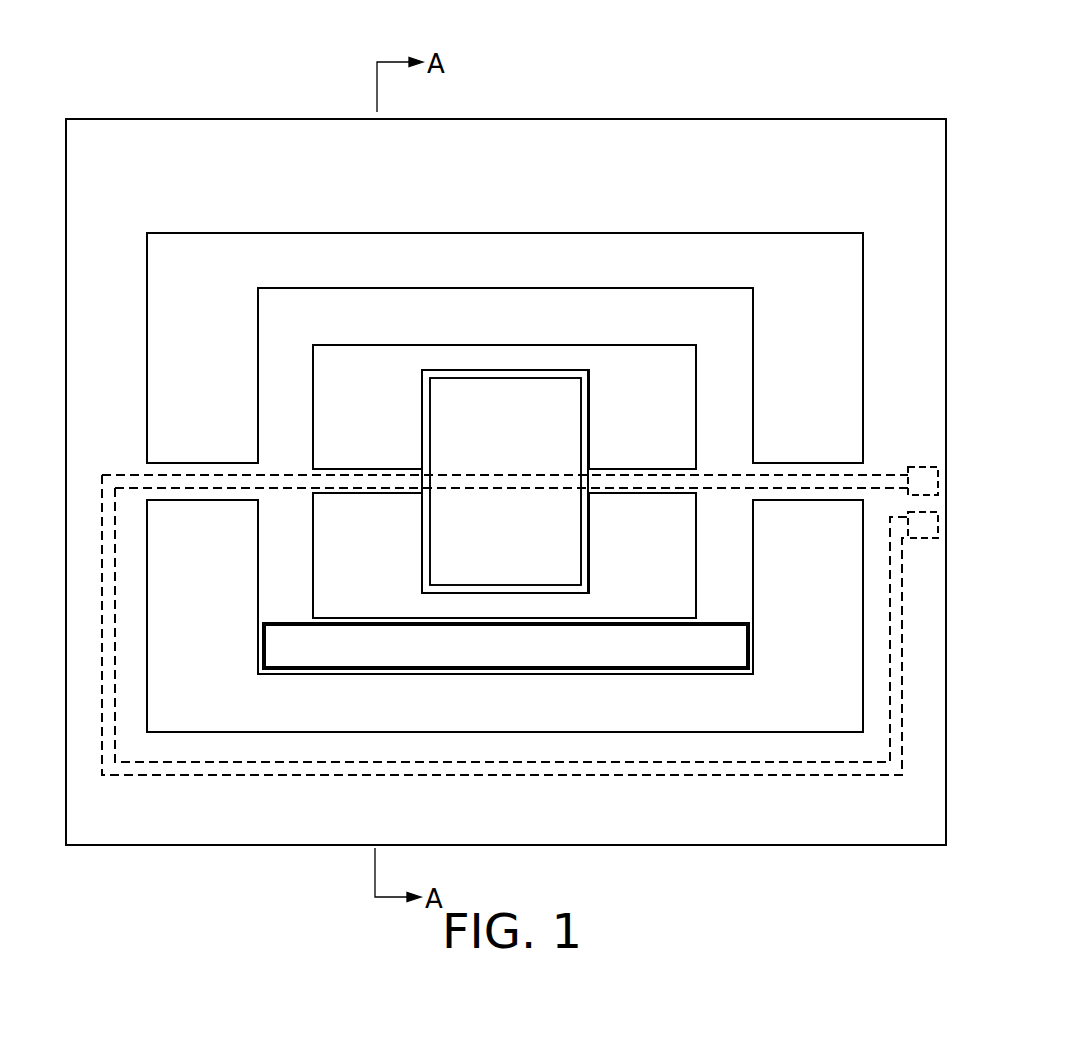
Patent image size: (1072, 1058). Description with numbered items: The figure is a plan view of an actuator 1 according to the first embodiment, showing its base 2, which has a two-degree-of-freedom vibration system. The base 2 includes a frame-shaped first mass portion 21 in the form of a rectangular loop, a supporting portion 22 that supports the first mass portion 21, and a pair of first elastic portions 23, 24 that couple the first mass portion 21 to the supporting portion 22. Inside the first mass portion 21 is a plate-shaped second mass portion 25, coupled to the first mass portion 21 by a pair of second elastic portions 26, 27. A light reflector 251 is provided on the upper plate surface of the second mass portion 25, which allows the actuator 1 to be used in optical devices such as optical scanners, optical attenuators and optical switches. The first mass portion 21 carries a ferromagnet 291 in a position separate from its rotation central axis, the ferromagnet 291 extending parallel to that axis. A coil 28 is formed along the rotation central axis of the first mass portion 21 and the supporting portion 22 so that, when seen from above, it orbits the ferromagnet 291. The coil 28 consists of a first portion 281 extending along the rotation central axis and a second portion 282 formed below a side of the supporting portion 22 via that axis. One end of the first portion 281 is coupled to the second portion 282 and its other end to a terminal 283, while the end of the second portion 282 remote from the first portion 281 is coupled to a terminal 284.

The actuator 1 is at (879, 102).
The base 2 is at (917, 296).
The first mass portion 21 is at (612, 313).
The supporting portion 22 is at (918, 394).
The first elastic portion 23 is at (198, 473).
The first elastic portion 24 is at (807, 472).
The second mass portion 25 is at (419, 590).
The light reflector 251 is at (513, 570).
The second elastic portion 26 is at (388, 470).
The second elastic portion 27 is at (668, 470).
The coil 28 is at (338, 458).
The first portion 281 is at (627, 478).
The second portion 282 is at (233, 766).
The terminal 283 is at (947, 474).
The terminal 284 is at (940, 521).
The ferromagnet 291 is at (647, 648).